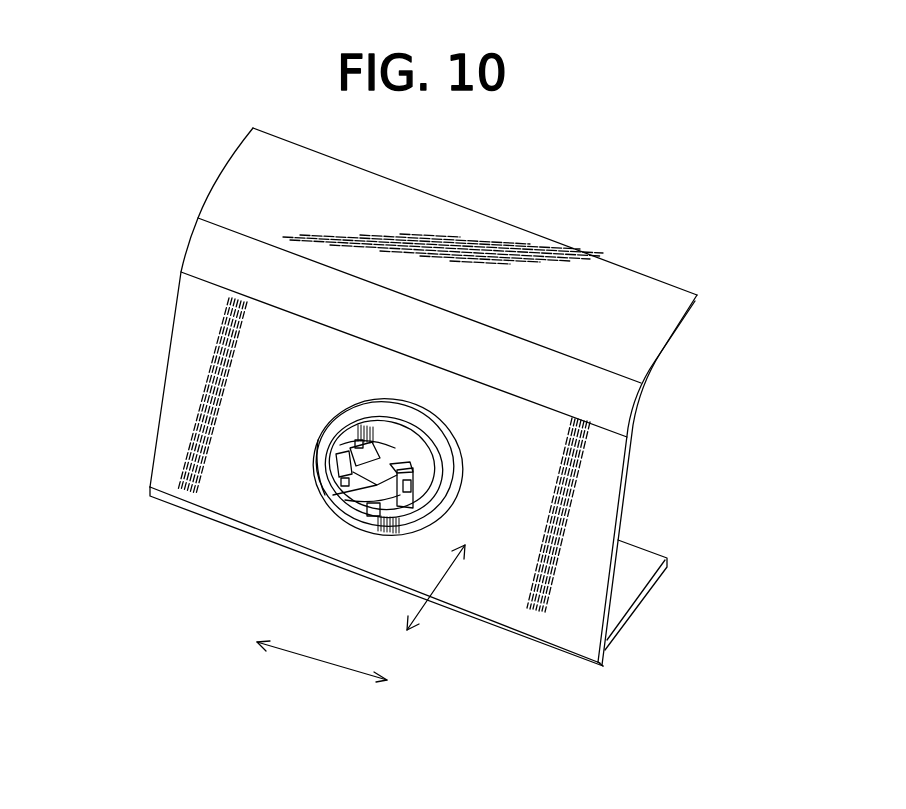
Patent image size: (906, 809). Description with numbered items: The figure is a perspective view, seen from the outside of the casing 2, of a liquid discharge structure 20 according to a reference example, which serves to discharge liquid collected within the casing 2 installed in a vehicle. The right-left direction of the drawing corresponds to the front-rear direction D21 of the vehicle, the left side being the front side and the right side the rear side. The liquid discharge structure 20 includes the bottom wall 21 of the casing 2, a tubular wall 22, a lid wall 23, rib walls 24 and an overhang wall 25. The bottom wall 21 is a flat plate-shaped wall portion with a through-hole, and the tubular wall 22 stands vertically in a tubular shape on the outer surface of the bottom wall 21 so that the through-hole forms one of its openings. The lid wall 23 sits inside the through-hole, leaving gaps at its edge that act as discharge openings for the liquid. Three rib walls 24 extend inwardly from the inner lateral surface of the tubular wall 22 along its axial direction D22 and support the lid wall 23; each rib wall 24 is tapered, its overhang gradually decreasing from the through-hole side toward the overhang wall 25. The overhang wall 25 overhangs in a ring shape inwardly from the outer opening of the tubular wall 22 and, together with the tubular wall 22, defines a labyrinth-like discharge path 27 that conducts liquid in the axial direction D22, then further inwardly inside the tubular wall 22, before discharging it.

The casing 2 is at (515, 202).
The liquid discharge structure 20 is at (158, 335).
The bottom wall 21 is at (605, 470).
The tubular wall 22 is at (393, 413).
The lid wall 23 is at (380, 482).
The rib walls 24 is at (405, 460).
The overhang wall 25 is at (330, 455).
The labyrinth-like discharge path 27 is at (350, 440).
The front-rear direction D21 is at (313, 660).
The axial direction D22 is at (428, 608).